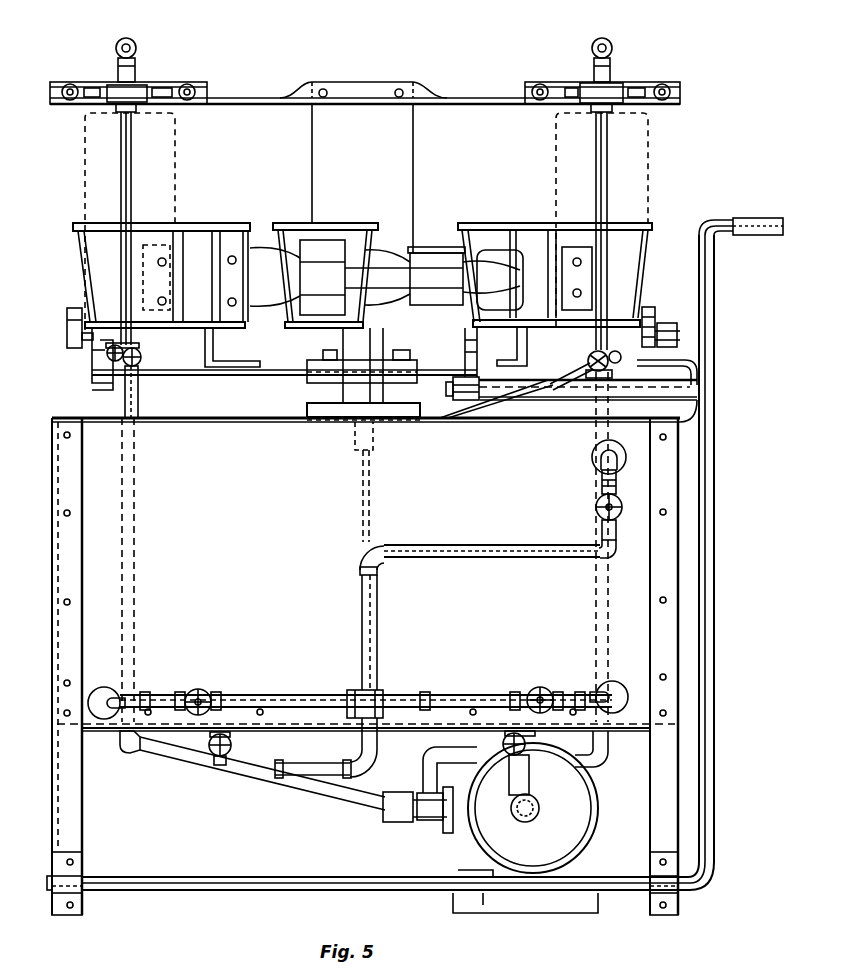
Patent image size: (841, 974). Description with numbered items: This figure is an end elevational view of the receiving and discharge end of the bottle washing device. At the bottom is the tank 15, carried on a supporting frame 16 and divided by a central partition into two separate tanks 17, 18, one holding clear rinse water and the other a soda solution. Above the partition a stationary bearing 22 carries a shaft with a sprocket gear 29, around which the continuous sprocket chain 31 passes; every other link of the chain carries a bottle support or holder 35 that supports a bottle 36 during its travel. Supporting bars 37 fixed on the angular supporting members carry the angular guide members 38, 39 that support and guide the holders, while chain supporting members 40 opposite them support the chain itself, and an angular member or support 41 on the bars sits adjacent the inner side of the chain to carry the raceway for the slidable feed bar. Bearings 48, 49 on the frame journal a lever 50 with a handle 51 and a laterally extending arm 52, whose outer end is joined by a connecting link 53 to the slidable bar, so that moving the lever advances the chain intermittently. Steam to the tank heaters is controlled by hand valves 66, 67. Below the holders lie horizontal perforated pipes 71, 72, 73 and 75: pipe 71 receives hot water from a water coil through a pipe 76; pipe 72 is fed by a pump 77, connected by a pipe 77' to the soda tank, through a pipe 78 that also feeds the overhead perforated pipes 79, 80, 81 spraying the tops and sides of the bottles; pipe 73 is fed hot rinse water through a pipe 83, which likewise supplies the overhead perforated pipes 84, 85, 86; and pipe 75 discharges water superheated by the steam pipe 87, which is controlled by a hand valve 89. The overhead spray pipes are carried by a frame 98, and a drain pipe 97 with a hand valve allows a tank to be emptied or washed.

The tank 15 is at (93, 460).
The supporting frame 16 is at (66, 787).
The tank 17 is at (662, 412).
The tank 18 is at (56, 417).
The stationary bearing 22 is at (345, 340).
The sprocket gear 29 is at (430, 252).
The sprocket chain 31 is at (420, 246).
The bottle support or holder 35 is at (215, 222).
The bottle 36 is at (78, 180).
The supporting bars 37 is at (272, 377).
The angular guide member 38 is at (72, 348).
The angular guide member 39 is at (668, 363).
The chain supporting members 40 is at (215, 350).
The angular member or support 41 is at (437, 380).
The bearing 48 is at (656, 864).
The bearing 49 is at (80, 866).
The lever 50 is at (716, 748).
The handle 51 is at (750, 218).
The laterally extending arm 52 is at (568, 400).
The connecting link 53 is at (466, 352).
The hand valve 66 is at (548, 690).
The hand valve 67 is at (207, 692).
The perforated pipe 71 is at (142, 356).
The perforated pipe 72 is at (95, 386).
The perforated pipe 73 is at (614, 330).
The perforated pipe 75 is at (592, 358).
The pipe 76 is at (139, 398).
The pump 77 is at (511, 828).
The pipe 77' is at (542, 808).
The pipe 78 is at (131, 176).
The perforated pipe 79 is at (70, 84).
The perforated pipe 80 is at (131, 44).
The perforated pipe 81 is at (190, 84).
The pipe 83 is at (606, 168).
The perforated pipe 84 is at (542, 84).
The perforated pipe 85 is at (606, 40).
The perforated pipe 86 is at (664, 84).
The steam pipe 87 is at (303, 778).
The hand valve 89 is at (596, 512).
The drain pipe 97 is at (535, 748).
The frame 98 is at (352, 92).